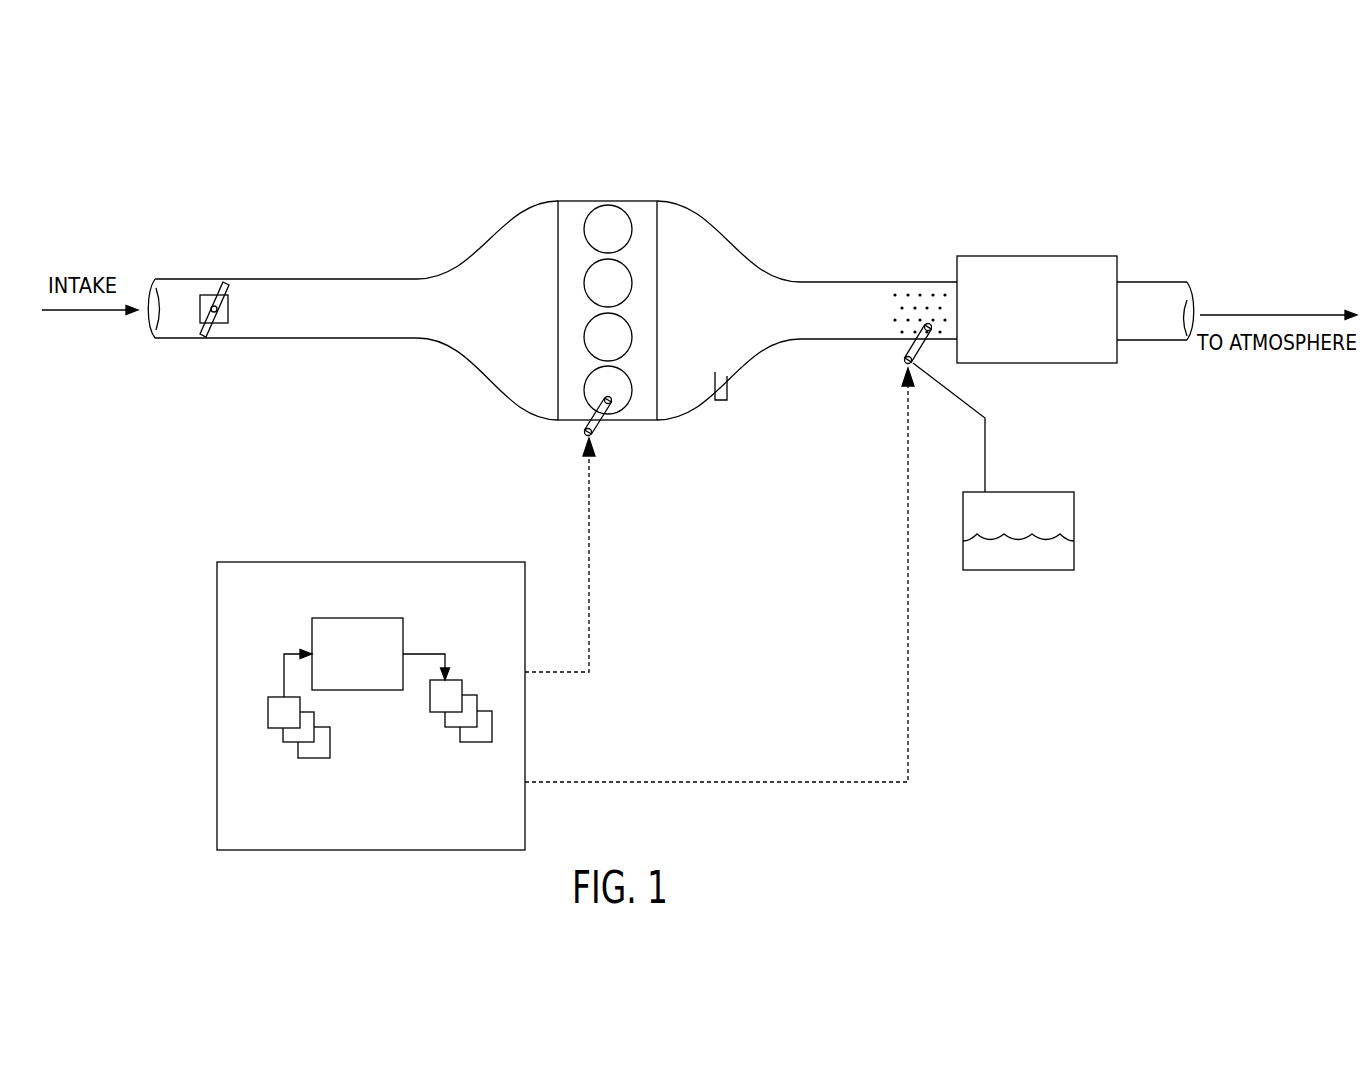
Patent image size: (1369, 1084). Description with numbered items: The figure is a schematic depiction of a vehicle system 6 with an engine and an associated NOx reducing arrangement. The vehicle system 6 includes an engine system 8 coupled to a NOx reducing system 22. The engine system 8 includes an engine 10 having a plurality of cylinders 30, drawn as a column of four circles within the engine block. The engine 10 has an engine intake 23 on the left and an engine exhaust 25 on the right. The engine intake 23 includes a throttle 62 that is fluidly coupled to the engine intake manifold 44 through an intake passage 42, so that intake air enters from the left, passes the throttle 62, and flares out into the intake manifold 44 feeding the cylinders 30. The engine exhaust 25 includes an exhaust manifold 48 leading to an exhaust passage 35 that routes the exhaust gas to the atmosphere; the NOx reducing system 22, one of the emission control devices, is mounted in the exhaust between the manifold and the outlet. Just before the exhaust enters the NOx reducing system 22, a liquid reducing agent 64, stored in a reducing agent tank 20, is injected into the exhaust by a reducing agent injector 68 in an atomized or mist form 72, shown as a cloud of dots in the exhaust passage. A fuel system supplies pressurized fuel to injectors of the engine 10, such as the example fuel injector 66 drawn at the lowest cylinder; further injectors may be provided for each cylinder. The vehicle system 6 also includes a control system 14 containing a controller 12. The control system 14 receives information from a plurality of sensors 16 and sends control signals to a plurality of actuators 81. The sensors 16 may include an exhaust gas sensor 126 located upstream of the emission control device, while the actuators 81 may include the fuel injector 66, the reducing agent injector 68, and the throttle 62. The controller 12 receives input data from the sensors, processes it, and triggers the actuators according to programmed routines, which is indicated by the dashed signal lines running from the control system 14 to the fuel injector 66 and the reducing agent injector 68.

The vehicle system 6 is at (233, 193).
The engine system 8 is at (789, 161).
The engine 10 is at (658, 290).
The controller 12 is at (357, 654).
The control system 14 is at (322, 562).
The sensors 16 is at (255, 765).
The reducing agent tank 20 is at (1075, 562).
The NOx reducing system 22 is at (1037, 309).
The engine intake 23 is at (358, 257).
The engine exhaust 25 is at (1013, 213).
The cylinders 30 is at (630, 223).
The exhaust passage 35 is at (1137, 282).
The intake passage 42 is at (262, 340).
The engine intake manifold 44 is at (524, 321).
The exhaust manifold 48 is at (744, 321).
The throttle 62 is at (229, 318).
The reducing agent 64 is at (1018, 540).
The fuel injector 66 is at (605, 426).
The reducing agent injector 68 is at (905, 350).
The atomized or mist form 72 is at (928, 290).
The actuators 81 is at (420, 748).
The exhaust gas sensor 126 is at (727, 382).